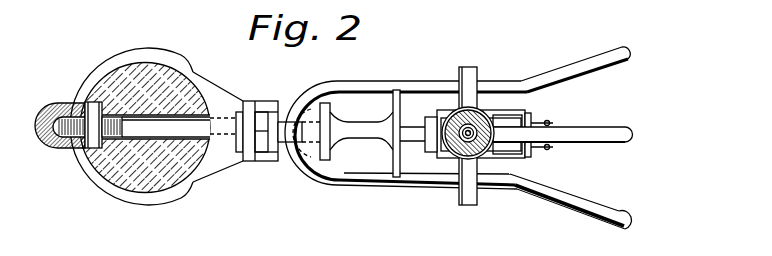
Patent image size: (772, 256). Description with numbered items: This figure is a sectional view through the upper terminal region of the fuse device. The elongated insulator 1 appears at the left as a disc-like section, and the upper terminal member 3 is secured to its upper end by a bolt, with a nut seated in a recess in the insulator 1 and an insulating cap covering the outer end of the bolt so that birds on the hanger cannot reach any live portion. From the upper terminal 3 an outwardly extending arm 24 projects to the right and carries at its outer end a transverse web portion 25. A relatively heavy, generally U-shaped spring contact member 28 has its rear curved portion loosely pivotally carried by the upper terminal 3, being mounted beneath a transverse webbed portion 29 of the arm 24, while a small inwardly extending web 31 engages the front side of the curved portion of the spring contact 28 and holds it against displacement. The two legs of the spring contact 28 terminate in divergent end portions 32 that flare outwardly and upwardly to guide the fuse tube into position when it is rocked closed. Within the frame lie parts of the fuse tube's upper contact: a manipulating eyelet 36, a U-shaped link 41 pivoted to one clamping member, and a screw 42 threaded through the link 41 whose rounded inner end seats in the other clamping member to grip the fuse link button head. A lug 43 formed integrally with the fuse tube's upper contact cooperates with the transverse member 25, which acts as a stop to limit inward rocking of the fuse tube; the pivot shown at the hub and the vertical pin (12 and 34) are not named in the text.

The elongated insulator 1 is at (127, 205).
The upper terminal member 3 is at (254, 99).
The hub roller 12 is at (489, 110).
The outwardly extending arm 24 is at (358, 145).
The transverse web portion 25 is at (407, 97).
The spring contact member 28 is at (426, 79).
The transverse webbed portion 29 is at (268, 163).
The inwardly extending web 31 is at (302, 162).
The divergent end portions 32 is at (568, 60).
The pivot pin 34 is at (478, 65).
The manipulating eyelet 36 is at (634, 135).
The U-shaped link 41 is at (523, 160).
The screw 42 is at (550, 123).
The lug 43 is at (417, 137).